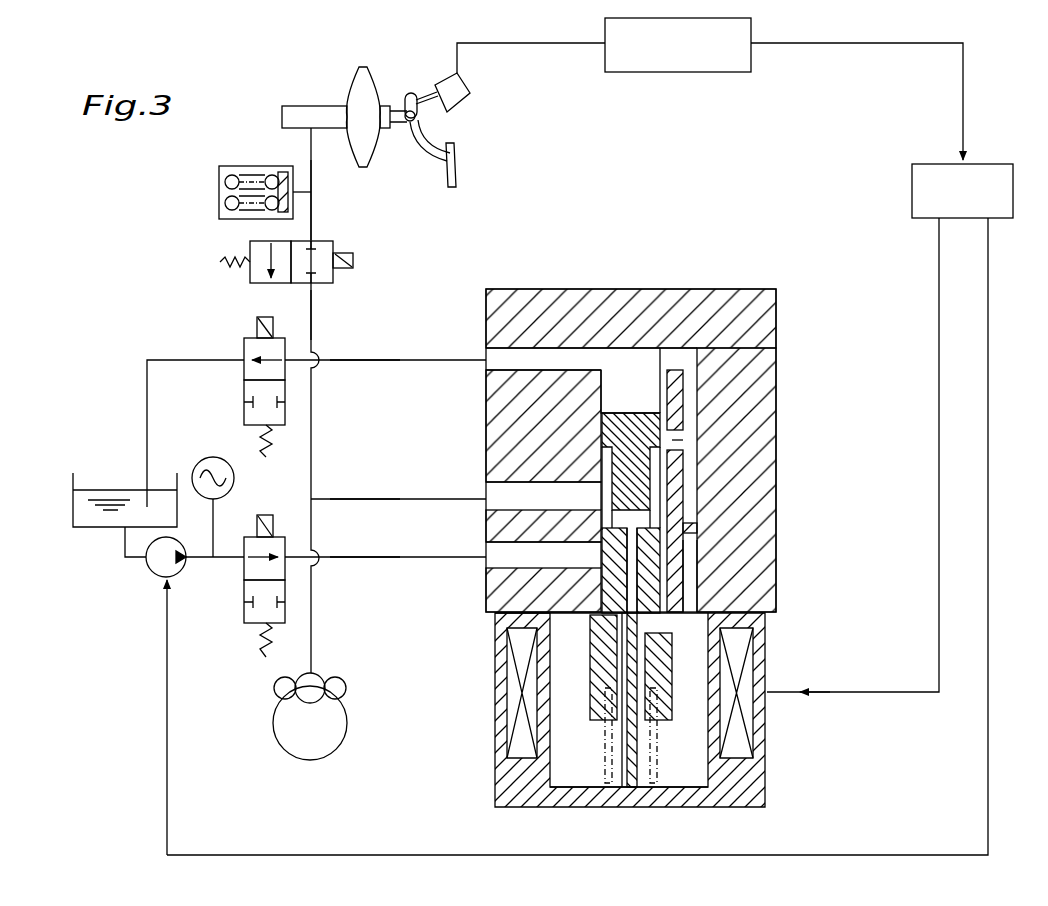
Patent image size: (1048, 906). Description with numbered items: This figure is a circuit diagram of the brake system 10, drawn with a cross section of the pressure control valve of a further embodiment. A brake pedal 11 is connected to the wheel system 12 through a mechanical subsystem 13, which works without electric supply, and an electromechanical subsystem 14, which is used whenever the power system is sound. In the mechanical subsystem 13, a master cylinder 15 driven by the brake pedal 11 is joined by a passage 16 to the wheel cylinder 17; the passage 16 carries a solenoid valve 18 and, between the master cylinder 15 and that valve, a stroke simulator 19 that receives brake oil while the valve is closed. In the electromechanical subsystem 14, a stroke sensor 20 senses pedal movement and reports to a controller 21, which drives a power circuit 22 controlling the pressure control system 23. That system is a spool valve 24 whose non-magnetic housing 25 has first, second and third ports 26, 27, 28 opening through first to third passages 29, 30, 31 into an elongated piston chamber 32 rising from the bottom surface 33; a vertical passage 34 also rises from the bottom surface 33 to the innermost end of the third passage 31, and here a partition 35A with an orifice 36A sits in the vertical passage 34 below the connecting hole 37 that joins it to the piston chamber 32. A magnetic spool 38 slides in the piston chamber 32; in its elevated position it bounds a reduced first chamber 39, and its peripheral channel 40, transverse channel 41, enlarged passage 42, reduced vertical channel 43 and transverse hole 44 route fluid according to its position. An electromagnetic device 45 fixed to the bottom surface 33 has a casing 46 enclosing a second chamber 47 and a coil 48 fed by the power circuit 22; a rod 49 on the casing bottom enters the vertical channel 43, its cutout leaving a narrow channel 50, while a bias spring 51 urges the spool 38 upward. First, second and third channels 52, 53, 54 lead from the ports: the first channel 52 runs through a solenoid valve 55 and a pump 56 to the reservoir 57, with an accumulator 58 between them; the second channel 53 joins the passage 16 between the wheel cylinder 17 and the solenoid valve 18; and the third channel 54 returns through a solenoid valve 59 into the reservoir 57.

The brake system 10 is at (429, 60).
The brake pedal 11 is at (456, 171).
The wheel system 12 is at (322, 765).
The mechanical subsystem 13 is at (274, 110).
The electromechanical subsystem 14 is at (401, 350).
The master cylinder 15 is at (320, 105).
The passage 16 is at (313, 212).
The wheel cylinder 17 is at (316, 680).
The solenoid valve 18 is at (333, 245).
The stroke simulator 19 is at (219, 192).
The stroke sensor 20 is at (465, 102).
The controller 21 is at (651, 72).
The power circuit 22 is at (864, 192).
The pressure control system 23 is at (563, 283).
The spool valve 24 is at (508, 283).
The housing 25 is at (758, 290).
The first port 26 is at (484, 568).
The second port 27 is at (492, 507).
The third port 28 is at (482, 368).
The first passage 29 is at (500, 553).
The second passage 30 is at (495, 493).
The third passage 31 is at (484, 352).
The piston chamber 32 is at (598, 397).
The bottom surface 33 is at (567, 615).
The vertical passage 34 is at (688, 478).
The partition 35A is at (695, 525).
The orifice 36A is at (700, 543).
The connecting hole 37 is at (678, 440).
The spool 38 is at (662, 677).
The first chamber 39 is at (652, 400).
The peripheral channel 40 is at (657, 461).
The transverse channel 41 is at (640, 515).
The enlarged passage 42 is at (622, 680).
The vertical channel 43 is at (632, 542).
The transverse hole 44 is at (660, 628).
The electromagnetic device 45 is at (490, 739).
The casing 46 is at (493, 790).
The second chamber 47 is at (697, 768).
The coil 48 is at (740, 735).
The rod 49 is at (640, 760).
The narrow channel 50 is at (633, 595).
The bias spring 51 is at (657, 750).
The first channel 52 is at (352, 555).
The second channel 53 is at (352, 497).
The third channel 54 is at (352, 358).
The solenoid valve 55 is at (243, 610).
The pump 56 is at (150, 572).
The reservoir 57 is at (97, 532).
The accumulator 58 is at (235, 480).
The solenoid valve 59 is at (243, 395).